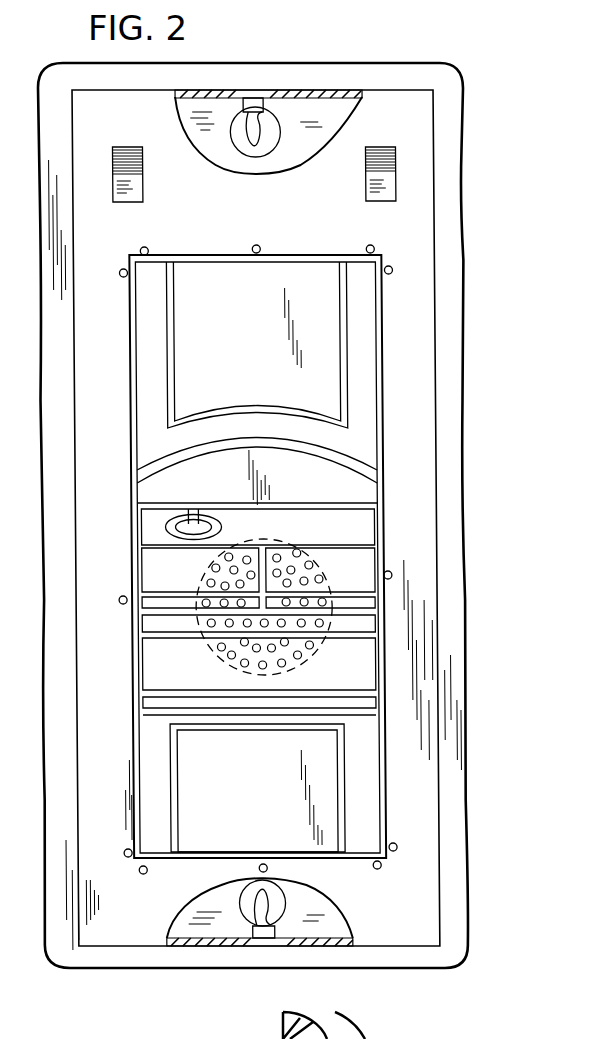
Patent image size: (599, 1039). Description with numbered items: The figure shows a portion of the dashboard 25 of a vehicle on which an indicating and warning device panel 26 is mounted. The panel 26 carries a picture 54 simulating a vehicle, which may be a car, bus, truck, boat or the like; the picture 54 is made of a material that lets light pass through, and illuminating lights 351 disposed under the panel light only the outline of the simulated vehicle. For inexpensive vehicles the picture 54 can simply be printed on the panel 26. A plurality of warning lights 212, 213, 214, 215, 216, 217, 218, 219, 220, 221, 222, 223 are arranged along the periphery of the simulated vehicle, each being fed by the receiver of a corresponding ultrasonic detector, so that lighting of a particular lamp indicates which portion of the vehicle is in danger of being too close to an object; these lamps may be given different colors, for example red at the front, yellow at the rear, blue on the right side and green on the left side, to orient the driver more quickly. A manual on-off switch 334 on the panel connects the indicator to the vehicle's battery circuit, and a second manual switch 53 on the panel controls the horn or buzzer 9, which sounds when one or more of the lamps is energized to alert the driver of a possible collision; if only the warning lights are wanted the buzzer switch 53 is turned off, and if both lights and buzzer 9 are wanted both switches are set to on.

The dashboard 25 is at (393, 72).
The indicating and warning device panel 26 is at (306, 208).
The power switch 53 is at (112, 165).
The manual on-off switch 334 is at (395, 158).
The illuminating lights 351 is at (279, 118).
The picture 54 is at (380, 442).
The horn or buzzer 9 is at (319, 658).
The warning light 212 is at (262, 235).
The warning light 213 is at (377, 236).
The warning light 214 is at (387, 274).
The warning light 215 is at (387, 843).
The warning light 216 is at (371, 869).
The warning light 217 is at (253, 868).
The warning light 218 is at (133, 870).
The warning light 219 is at (122, 849).
The warning light 220 is at (119, 596).
The warning light 221 is at (125, 247).
The warning light 222 is at (145, 247).
The warning light 223 is at (388, 574).